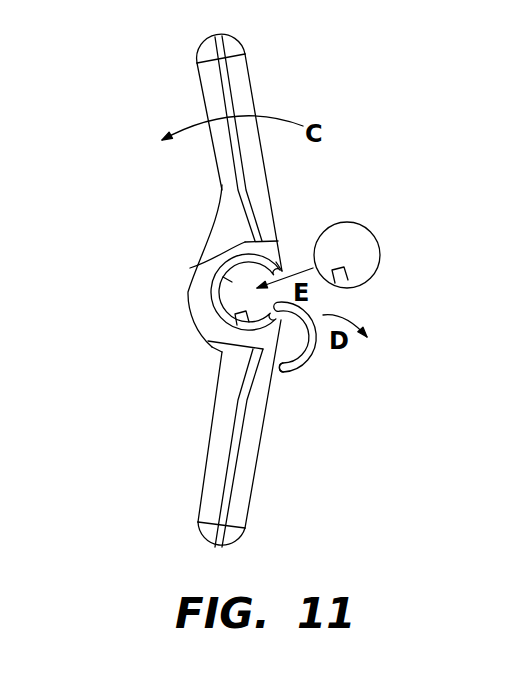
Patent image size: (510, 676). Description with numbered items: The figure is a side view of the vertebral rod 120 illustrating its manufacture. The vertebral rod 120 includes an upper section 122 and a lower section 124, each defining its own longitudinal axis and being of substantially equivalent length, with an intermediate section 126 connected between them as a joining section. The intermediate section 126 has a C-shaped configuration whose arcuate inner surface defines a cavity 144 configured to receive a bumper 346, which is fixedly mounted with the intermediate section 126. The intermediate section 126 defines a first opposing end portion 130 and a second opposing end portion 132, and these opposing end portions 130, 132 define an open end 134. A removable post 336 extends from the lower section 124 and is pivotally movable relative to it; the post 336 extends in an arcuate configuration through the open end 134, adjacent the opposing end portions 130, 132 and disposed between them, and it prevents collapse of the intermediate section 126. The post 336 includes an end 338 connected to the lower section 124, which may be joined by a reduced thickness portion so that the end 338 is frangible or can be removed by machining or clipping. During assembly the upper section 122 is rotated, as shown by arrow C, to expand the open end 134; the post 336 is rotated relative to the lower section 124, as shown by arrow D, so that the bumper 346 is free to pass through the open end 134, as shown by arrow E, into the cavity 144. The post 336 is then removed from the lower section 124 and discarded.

The vertebral rod 120 is at (98, 202).
The upper section 122 is at (222, 105).
The lower section 124 is at (220, 472).
The intermediate section 126 is at (197, 302).
The first opposing end portion 130 is at (217, 234).
The second opposing end portion 132 is at (245, 352).
The open end 134 is at (284, 266).
The cavity 144 is at (190, 268).
The post 336 is at (300, 370).
The end 338 is at (280, 376).
The bumper 346 is at (362, 238).